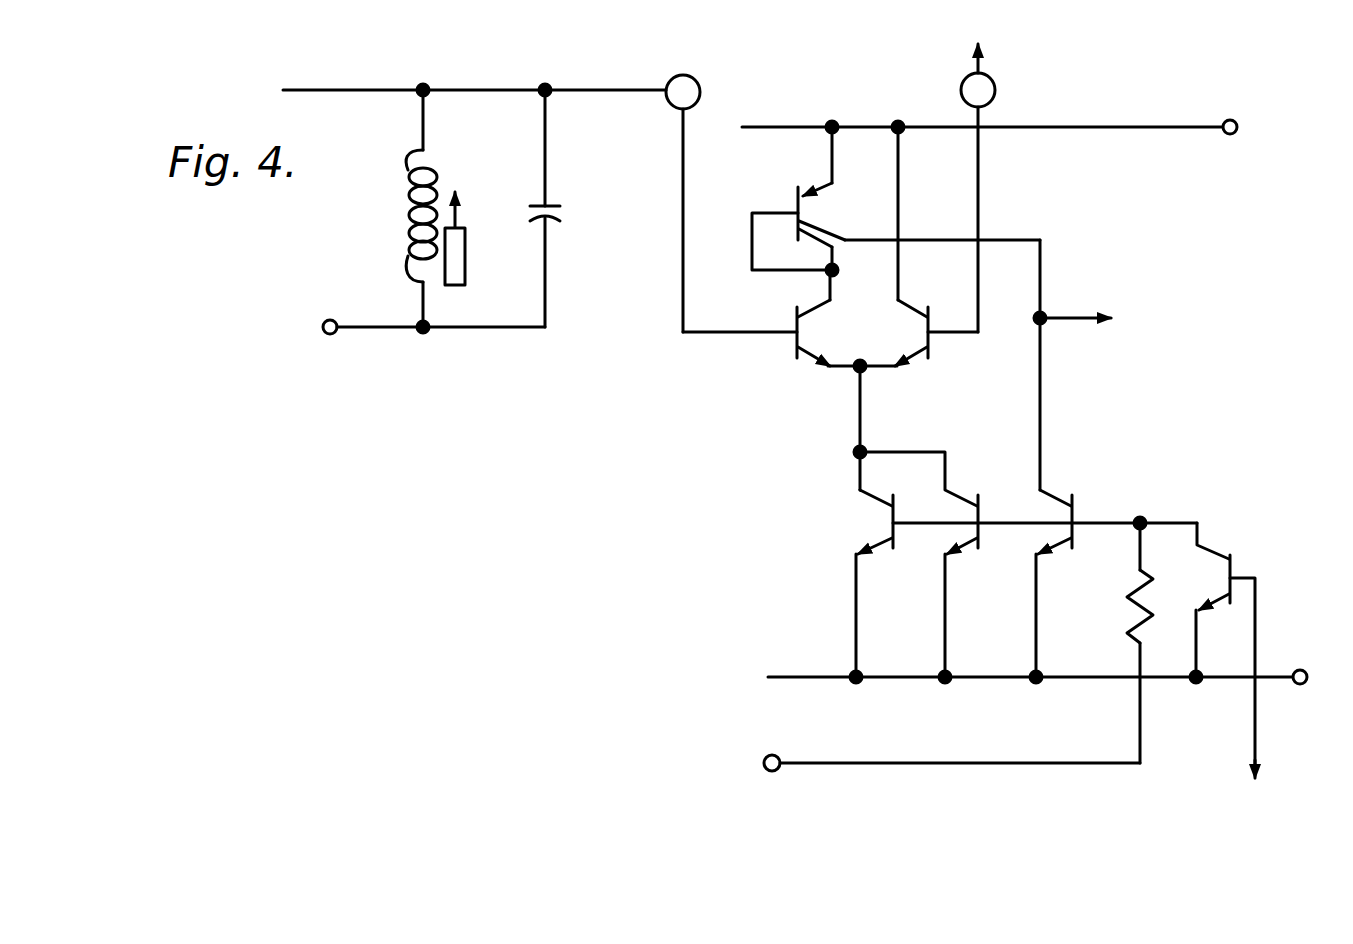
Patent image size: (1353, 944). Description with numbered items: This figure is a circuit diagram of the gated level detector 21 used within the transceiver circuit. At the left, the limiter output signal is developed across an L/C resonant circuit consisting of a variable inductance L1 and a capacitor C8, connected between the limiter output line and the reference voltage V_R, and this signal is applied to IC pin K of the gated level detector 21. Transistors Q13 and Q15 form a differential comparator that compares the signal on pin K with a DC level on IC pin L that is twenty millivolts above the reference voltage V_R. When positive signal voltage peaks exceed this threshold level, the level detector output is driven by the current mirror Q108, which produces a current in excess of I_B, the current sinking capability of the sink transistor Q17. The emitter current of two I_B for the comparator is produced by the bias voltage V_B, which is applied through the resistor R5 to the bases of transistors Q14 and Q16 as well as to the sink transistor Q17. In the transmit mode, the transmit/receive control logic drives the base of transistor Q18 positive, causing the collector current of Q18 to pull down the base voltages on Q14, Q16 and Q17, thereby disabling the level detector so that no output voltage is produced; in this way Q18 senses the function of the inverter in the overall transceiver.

The gated level detector 21 is at (582, 468).
The variable inductance L1 is at (419, 208).
The capacitor C8 is at (562, 208).
The current mirror Q108 is at (896, 201).
The transistor Q13 is at (828, 318).
The transistor Q15 is at (895, 246).
The transistor Q14 is at (863, 583).
The transistor Q16 is at (932, 564).
The sink transistor Q17 is at (1066, 458).
The transistor Q18 is at (1227, 650).
The resistor R5 is at (1117, 643).